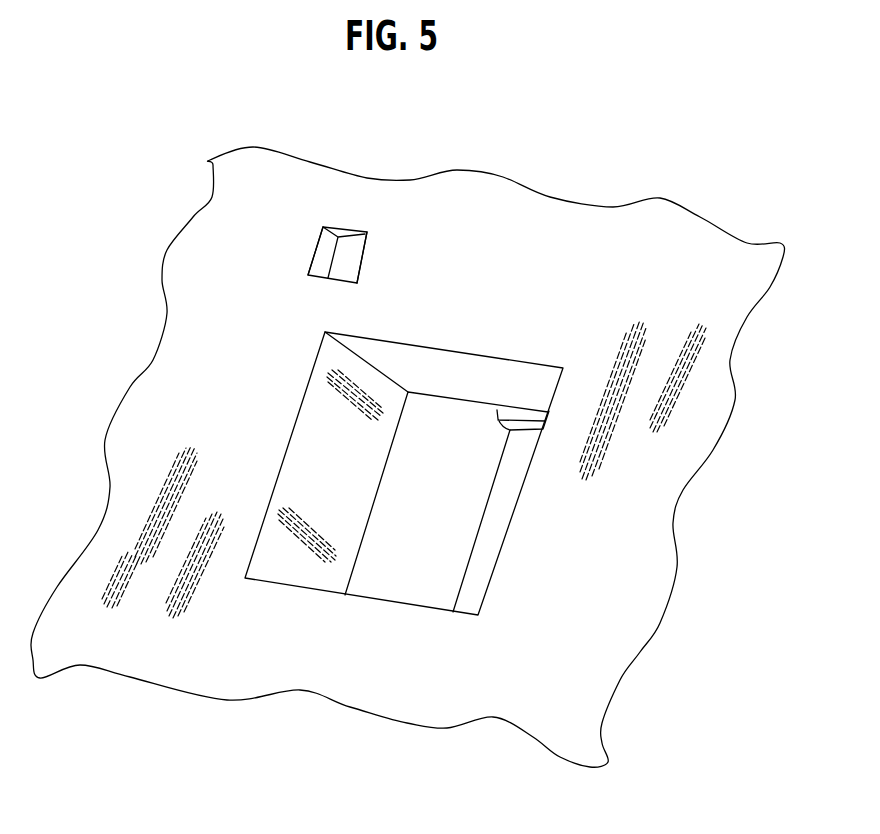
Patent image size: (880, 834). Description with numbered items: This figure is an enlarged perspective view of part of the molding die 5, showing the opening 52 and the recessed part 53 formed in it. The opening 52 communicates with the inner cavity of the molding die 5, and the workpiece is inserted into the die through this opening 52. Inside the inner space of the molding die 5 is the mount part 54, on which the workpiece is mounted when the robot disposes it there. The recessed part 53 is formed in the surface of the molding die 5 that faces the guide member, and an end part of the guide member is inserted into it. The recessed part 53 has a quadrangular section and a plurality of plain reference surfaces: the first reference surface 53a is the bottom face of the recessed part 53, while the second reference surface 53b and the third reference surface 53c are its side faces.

The molding die 5 is at (627, 283).
The opening 52 is at (308, 465).
The recessed part 53 is at (360, 262).
The first reference surface 53a is at (350, 252).
The second reference surface 53b is at (323, 252).
The third reference surface 53c is at (347, 238).
The mount part 54 is at (502, 510).